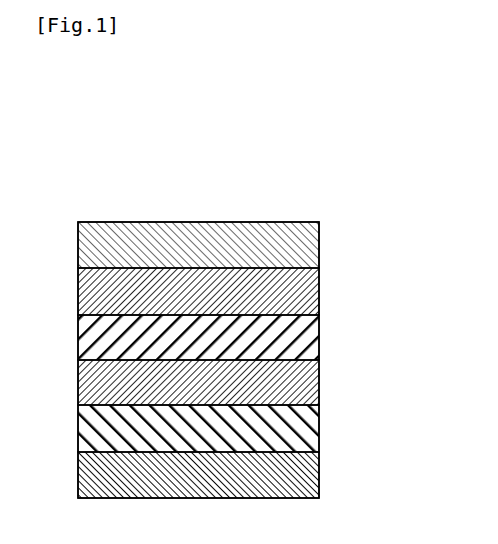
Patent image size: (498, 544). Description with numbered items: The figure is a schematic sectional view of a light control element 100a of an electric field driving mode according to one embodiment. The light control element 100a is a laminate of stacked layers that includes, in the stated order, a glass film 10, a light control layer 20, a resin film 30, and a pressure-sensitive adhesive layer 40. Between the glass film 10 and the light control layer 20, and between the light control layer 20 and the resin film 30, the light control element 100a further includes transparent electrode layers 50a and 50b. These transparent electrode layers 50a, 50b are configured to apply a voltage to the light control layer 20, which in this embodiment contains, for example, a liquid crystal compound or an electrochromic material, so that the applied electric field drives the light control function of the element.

The light control element 100a is at (365, 145).
The glass film 10 is at (319, 245).
The transparent electrode layer 50a is at (319, 292).
The light control layer 20 is at (319, 339).
The transparent electrode layer 50b is at (319, 385).
The resin film 30 is at (319, 426).
The pressure-sensitive adhesive layer 40 is at (319, 472).